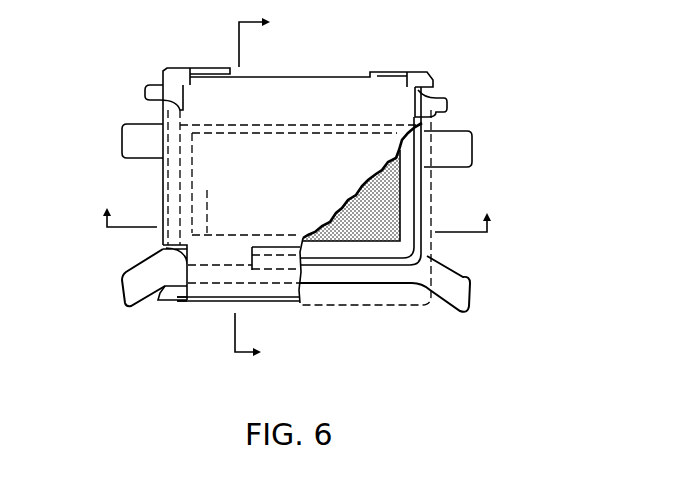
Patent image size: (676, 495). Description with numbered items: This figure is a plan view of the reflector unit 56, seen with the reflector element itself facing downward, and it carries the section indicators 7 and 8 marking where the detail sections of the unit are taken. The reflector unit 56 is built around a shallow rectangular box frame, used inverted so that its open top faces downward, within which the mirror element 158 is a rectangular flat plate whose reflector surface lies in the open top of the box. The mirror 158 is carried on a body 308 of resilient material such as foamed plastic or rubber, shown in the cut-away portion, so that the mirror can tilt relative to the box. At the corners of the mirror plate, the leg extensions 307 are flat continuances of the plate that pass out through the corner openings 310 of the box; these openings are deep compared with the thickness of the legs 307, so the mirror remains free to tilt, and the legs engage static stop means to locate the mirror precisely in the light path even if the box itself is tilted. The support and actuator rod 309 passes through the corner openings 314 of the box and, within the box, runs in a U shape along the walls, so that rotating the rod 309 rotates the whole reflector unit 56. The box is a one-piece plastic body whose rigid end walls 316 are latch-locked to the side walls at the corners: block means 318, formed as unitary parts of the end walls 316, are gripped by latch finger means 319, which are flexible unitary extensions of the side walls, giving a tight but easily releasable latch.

The reflector unit 56 is at (288, 309).
The mirror element 158 is at (428, 252).
The leg extensions 307 is at (462, 150).
The body of resilient material 308 is at (348, 242).
The support and actuator rod 309 is at (168, 98).
The corner openings 310 is at (170, 273).
The corner openings 314 is at (163, 78).
The end walls 316 is at (163, 207).
The block means 318 is at (182, 303).
The latch finger means 319 is at (168, 299).
The section line 7- 7 is at (259, 188).
The section line 8- 8 is at (297, 210).